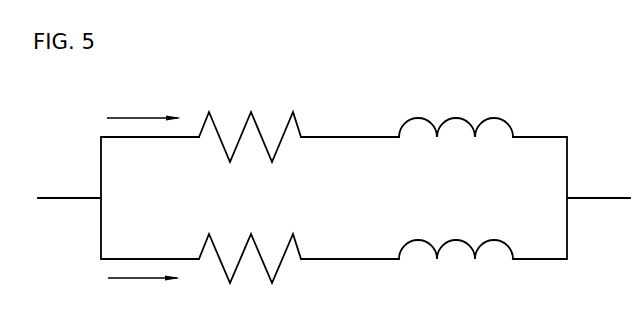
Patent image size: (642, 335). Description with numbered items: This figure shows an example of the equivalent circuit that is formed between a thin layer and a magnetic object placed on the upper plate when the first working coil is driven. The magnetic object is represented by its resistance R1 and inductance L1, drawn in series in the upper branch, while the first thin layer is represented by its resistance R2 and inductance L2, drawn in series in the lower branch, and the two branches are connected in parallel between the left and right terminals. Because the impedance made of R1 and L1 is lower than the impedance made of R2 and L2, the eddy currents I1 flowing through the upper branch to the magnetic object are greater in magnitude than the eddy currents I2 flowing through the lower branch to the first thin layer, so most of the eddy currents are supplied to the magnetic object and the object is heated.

The eddy currents I1 is at (144, 103).
The eddy currents I2 is at (144, 295).
The resistance R1 is at (250, 123).
The resistance R2 is at (250, 273).
The inductance L1 is at (456, 111).
The inductance L2 is at (456, 276).